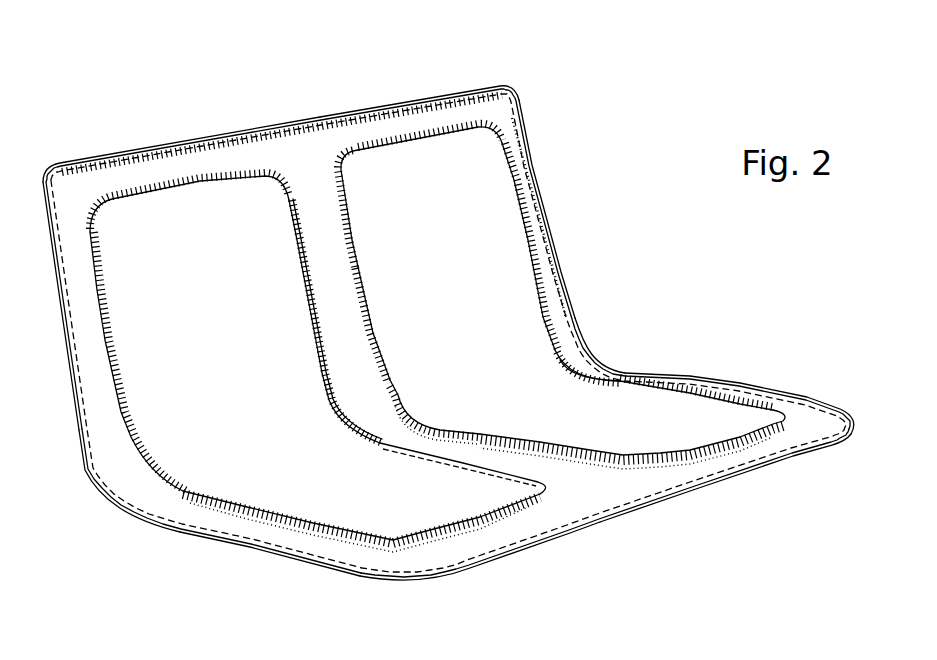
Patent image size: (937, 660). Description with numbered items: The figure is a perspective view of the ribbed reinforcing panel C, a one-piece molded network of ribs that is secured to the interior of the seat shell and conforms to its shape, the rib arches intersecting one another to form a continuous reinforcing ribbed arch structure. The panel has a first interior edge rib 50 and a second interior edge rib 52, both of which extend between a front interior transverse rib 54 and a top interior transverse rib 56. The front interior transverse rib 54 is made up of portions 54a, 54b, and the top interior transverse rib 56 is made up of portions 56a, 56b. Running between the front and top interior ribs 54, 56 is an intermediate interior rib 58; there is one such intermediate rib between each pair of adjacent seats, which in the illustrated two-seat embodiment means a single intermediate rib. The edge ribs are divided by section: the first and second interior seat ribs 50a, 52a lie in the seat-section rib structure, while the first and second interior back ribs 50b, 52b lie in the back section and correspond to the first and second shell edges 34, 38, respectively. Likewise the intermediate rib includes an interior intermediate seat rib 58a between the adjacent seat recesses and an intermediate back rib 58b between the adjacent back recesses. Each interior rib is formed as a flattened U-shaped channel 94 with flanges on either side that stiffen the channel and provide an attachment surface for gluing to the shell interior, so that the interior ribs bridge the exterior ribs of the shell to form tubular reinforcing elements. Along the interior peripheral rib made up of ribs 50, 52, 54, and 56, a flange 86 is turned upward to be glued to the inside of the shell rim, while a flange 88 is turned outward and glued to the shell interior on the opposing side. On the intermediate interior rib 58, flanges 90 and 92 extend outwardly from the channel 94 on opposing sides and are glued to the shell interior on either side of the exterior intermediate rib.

The first shell edge 34 is at (103, 495).
The second shell edge 38 is at (613, 363).
The first interior edge rib 50 is at (213, 553).
The first interior seat rib 50a is at (322, 573).
The first interior back rib 50b is at (112, 310).
The second interior edge rib 52 is at (563, 279).
The second interior seat rib 52a is at (723, 380).
The second interior back rib 52b is at (539, 182).
The front interior transverse rib 54 is at (683, 500).
The front interior transverse rib portion 54a is at (453, 567).
The front interior transverse rib portion 54b is at (787, 463).
The top interior transverse rib 56 is at (390, 98).
The top interior transverse rib portion 56a is at (120, 153).
The top interior transverse rib portion 56b is at (453, 93).
The intermediate interior rib 58 is at (405, 398).
The interior intermediate seat rib 58a is at (468, 463).
The intermediate back rib 58b is at (349, 210).
The flange 86 is at (528, 130).
The flange 88 is at (519, 101).
The flange 90 is at (321, 373).
The flange 92 is at (378, 337).
The flattened U-shaped channel 94 is at (803, 427).
The ribbed reinforcing panel C is at (600, 326).